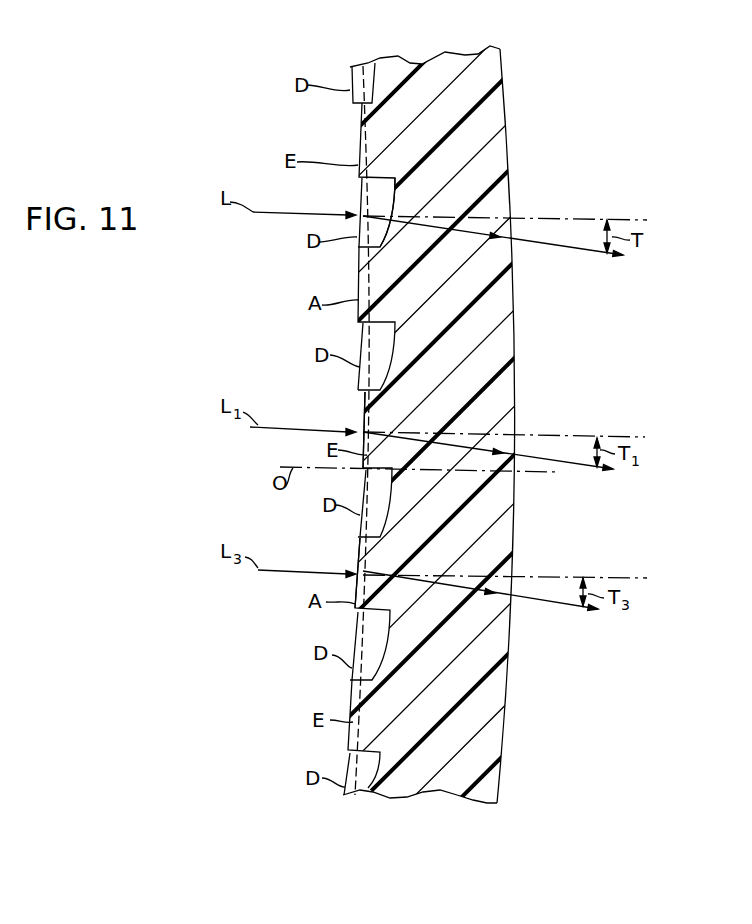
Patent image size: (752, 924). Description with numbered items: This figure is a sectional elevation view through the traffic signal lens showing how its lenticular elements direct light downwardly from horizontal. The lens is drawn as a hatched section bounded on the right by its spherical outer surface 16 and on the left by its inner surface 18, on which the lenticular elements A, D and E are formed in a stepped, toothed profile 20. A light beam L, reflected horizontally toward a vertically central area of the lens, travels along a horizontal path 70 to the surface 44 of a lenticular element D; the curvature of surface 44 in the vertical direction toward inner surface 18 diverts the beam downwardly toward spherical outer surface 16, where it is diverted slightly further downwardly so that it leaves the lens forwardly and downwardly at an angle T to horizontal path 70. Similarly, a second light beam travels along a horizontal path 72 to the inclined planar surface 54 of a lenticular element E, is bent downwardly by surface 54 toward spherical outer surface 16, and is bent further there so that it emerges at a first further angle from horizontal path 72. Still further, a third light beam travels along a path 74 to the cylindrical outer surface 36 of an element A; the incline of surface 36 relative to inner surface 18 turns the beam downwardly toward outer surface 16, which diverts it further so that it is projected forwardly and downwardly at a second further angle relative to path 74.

The spherical outer surface 16 is at (508, 118).
The inner surface 18 is at (360, 147).
The toothed surface 20 is at (260, 341).
The cylindrical outer surface 36 is at (360, 562).
The surface 44 is at (360, 205).
The inclined planar surface 54 is at (368, 415).
The horizontal path 70 is at (628, 220).
The horizontal path 72 is at (617, 437).
The path 74 is at (620, 577).